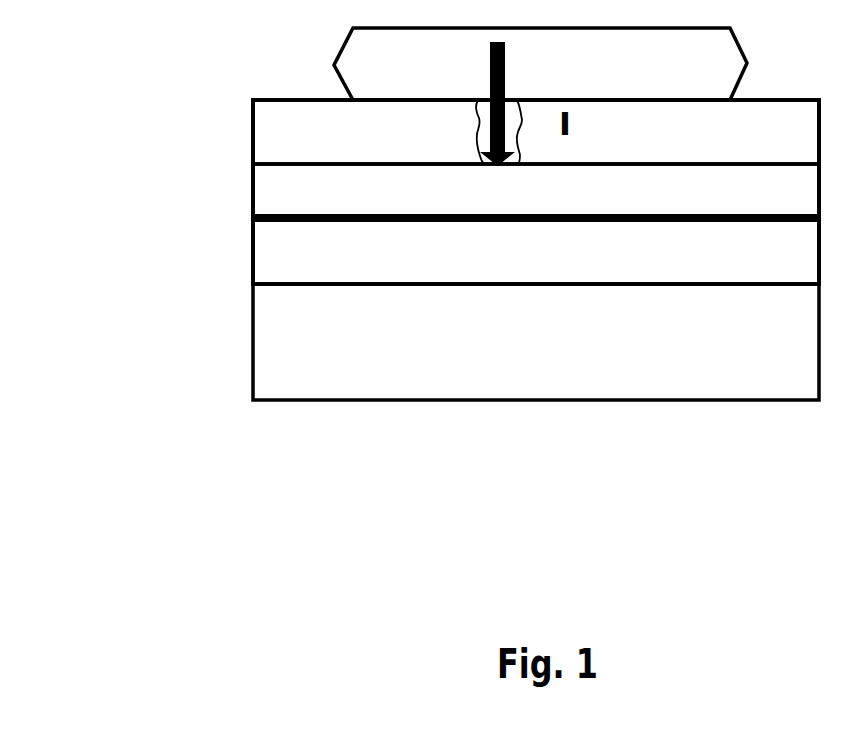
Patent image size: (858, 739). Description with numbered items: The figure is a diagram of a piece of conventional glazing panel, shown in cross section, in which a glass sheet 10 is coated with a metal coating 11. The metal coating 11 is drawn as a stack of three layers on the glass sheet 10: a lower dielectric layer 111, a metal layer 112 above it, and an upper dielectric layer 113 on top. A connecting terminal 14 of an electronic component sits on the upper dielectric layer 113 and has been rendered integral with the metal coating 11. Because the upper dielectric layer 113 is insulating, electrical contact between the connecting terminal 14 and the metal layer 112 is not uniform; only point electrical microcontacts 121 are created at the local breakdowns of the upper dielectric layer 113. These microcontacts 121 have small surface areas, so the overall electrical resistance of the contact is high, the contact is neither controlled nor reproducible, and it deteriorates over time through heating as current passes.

The glass sheet 10 is at (253, 377).
The metal coating 11 is at (110, 104).
The lower dielectric layer 111 is at (253, 262).
The metal layer 112 is at (253, 202).
The upper dielectric layer 113 is at (253, 133).
The connecting terminal 14 is at (334, 65).
The point electrical microcontacts 121 is at (512, 128).